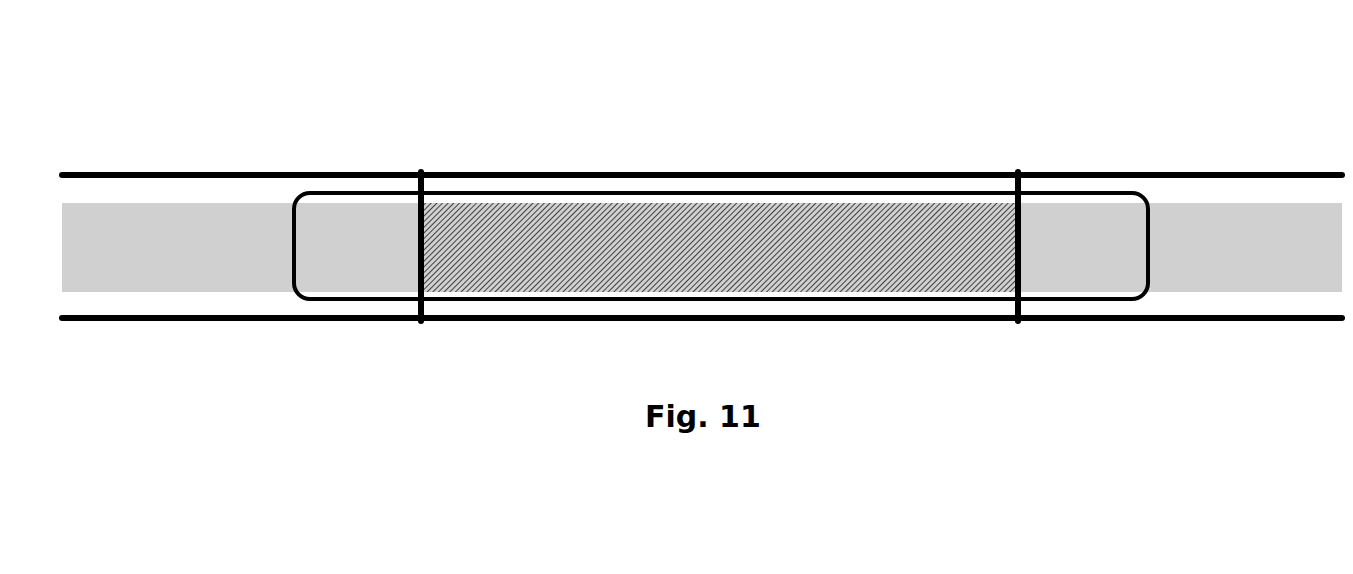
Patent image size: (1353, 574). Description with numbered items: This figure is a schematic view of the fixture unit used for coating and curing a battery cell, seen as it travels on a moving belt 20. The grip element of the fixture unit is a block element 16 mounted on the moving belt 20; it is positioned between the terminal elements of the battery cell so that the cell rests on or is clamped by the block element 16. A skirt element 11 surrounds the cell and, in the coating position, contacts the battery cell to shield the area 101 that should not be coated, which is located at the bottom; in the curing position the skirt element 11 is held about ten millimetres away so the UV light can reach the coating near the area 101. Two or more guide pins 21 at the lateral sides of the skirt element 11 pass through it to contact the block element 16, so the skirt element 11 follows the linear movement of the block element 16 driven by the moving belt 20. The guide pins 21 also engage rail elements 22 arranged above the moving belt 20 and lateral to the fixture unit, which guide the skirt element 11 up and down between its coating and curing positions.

The moving belt 20 is at (170, 292).
The rail elements 22 is at (265, 172).
The skirt element 11 is at (563, 302).
The block element 16 is at (700, 235).
The guide pins 21 is at (427, 172).
The area of the battery cell 101 is at (1128, 243).